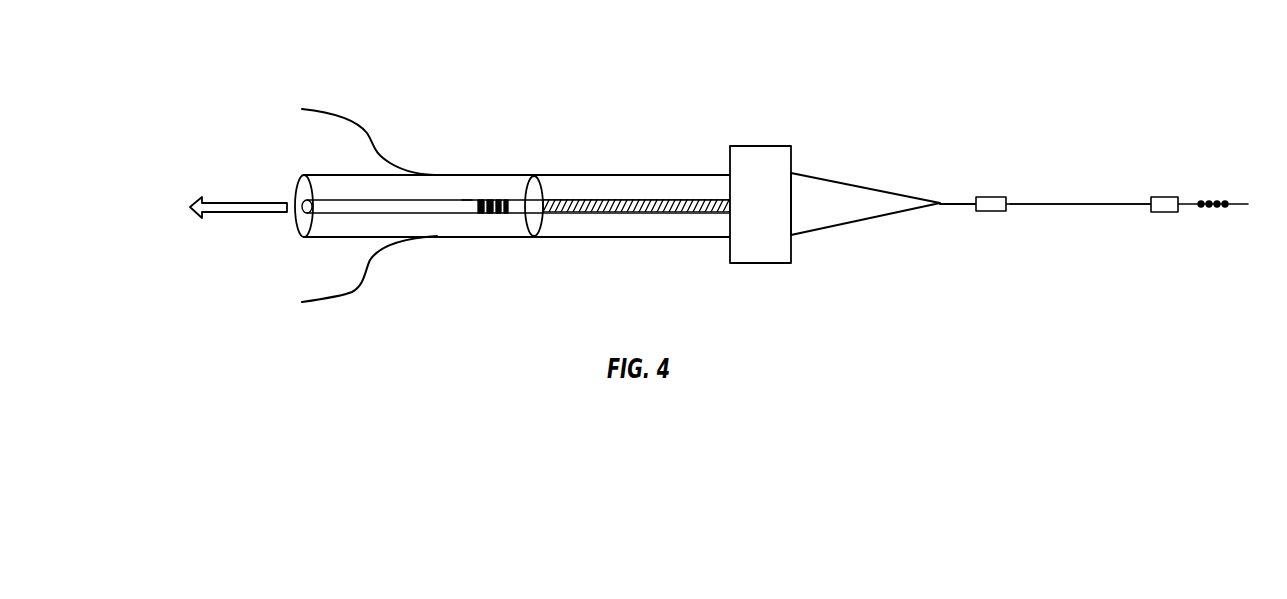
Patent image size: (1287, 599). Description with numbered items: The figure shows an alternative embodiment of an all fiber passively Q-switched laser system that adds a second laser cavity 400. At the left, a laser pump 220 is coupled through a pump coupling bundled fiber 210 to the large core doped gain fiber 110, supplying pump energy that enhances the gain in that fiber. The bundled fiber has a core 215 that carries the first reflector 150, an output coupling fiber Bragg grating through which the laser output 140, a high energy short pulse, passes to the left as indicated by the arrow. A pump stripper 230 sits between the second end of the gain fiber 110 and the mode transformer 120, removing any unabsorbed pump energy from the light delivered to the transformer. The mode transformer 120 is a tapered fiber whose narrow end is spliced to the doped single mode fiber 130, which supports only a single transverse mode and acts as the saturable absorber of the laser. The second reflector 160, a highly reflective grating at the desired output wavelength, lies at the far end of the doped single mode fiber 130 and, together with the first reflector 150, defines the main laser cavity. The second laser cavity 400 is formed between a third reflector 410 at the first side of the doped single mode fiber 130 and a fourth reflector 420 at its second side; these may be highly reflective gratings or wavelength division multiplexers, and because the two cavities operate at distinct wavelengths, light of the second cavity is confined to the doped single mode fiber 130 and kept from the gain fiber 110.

The large core doped gain fiber 110 is at (608, 143).
The mode transformer 120 is at (853, 182).
The doped single mode fiber 130 is at (1083, 204).
The laser output 140 is at (257, 215).
The first reflector 150 is at (500, 199).
The second reflector 160 is at (1213, 208).
The pump coupling bundled fiber 210 is at (457, 175).
The core 215 is at (467, 203).
The laser pump 220 is at (340, 115).
The pump stripper 230 is at (792, 158).
The second laser cavity 400 is at (1100, 158).
The third reflector 410 is at (992, 212).
The fourth reflector 420 is at (1163, 212).